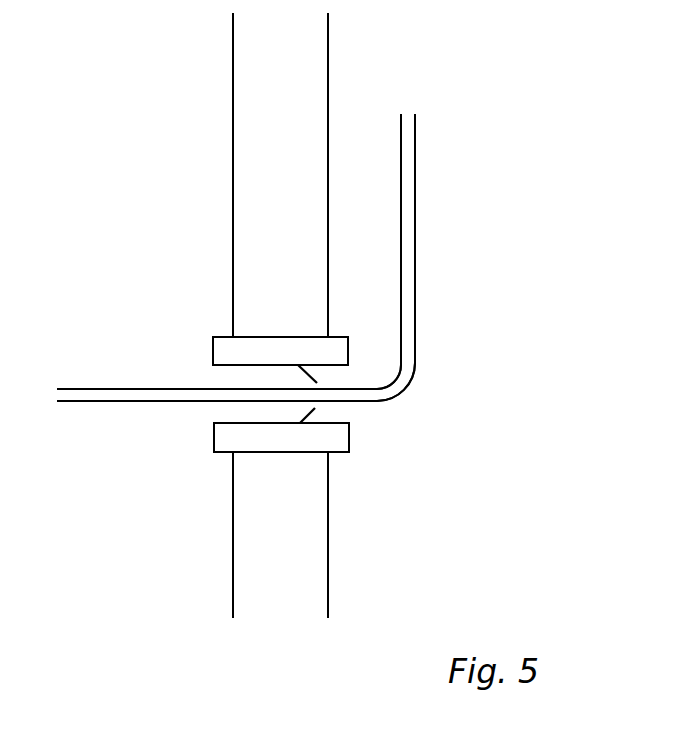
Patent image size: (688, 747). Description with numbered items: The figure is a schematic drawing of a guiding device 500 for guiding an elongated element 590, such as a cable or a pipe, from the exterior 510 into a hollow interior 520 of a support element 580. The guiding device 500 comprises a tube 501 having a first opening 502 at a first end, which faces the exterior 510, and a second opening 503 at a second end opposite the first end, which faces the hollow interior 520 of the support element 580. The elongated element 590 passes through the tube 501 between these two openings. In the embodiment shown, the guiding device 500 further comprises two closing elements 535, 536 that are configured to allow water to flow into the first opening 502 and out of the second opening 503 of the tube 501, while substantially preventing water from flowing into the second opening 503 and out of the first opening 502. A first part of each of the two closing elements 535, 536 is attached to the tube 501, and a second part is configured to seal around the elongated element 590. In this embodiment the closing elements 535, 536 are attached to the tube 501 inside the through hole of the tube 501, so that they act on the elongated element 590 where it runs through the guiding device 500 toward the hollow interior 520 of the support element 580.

The guiding device 500 is at (201, 450).
The tube 501 is at (204, 535).
The first opening 502 is at (203, 382).
The second opening 503 is at (388, 478).
The exterior 510 is at (98, 165).
The hollow interior 520 is at (621, 163).
The closing element 535 is at (273, 369).
The closing element 536 is at (273, 416).
The support element 580 is at (204, 175).
The elongated element 590 is at (286, 252).